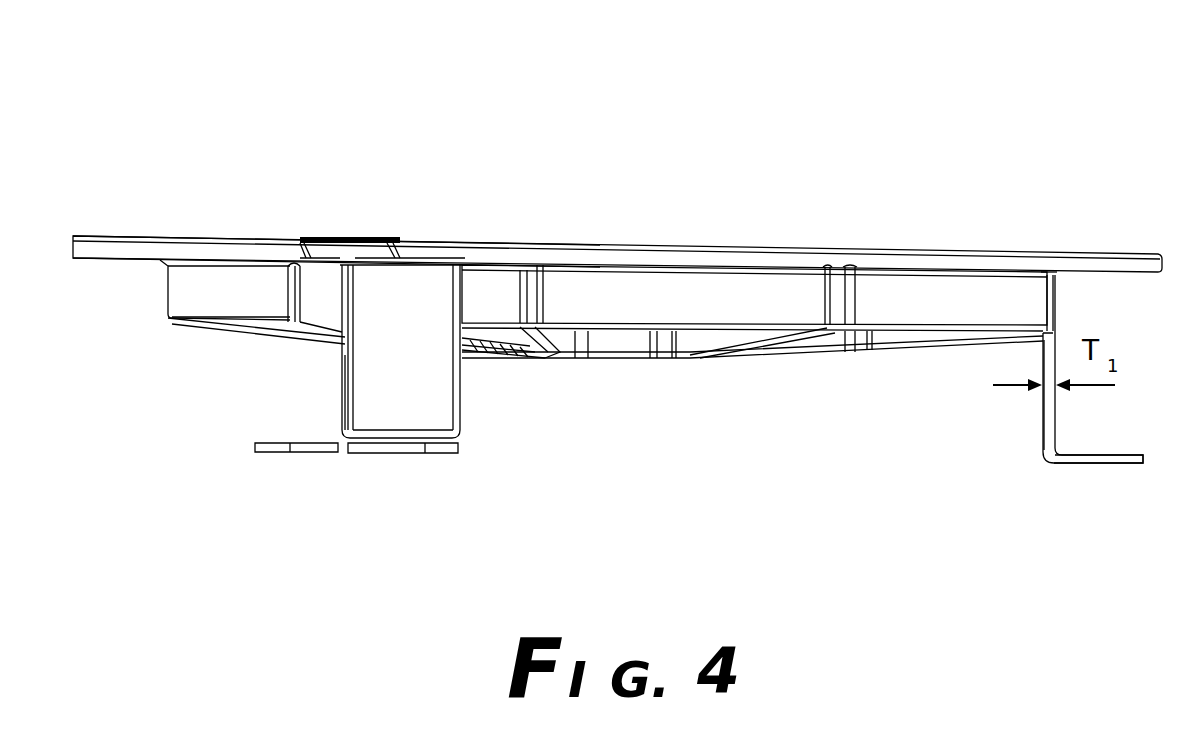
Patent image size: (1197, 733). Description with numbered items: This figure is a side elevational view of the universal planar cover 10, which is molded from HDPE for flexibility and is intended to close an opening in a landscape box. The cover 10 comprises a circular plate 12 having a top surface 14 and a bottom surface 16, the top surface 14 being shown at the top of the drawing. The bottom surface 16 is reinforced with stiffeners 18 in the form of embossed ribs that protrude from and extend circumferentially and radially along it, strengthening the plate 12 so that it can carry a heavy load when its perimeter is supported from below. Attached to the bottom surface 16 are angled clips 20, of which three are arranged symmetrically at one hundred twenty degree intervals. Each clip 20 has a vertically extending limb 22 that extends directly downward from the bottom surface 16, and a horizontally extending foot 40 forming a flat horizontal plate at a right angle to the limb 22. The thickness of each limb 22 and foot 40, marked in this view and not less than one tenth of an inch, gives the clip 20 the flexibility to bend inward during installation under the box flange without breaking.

The planar cover 10 is at (723, 108).
The circular plate 12 is at (1013, 258).
The top surface 14 is at (110, 236).
The bottom surface 16 is at (105, 258).
The stiffeners 18 is at (236, 274).
The angled clips 20 is at (347, 355).
The vertically extending limb 22 is at (383, 370).
The horizontally extending foot 40 is at (317, 448).